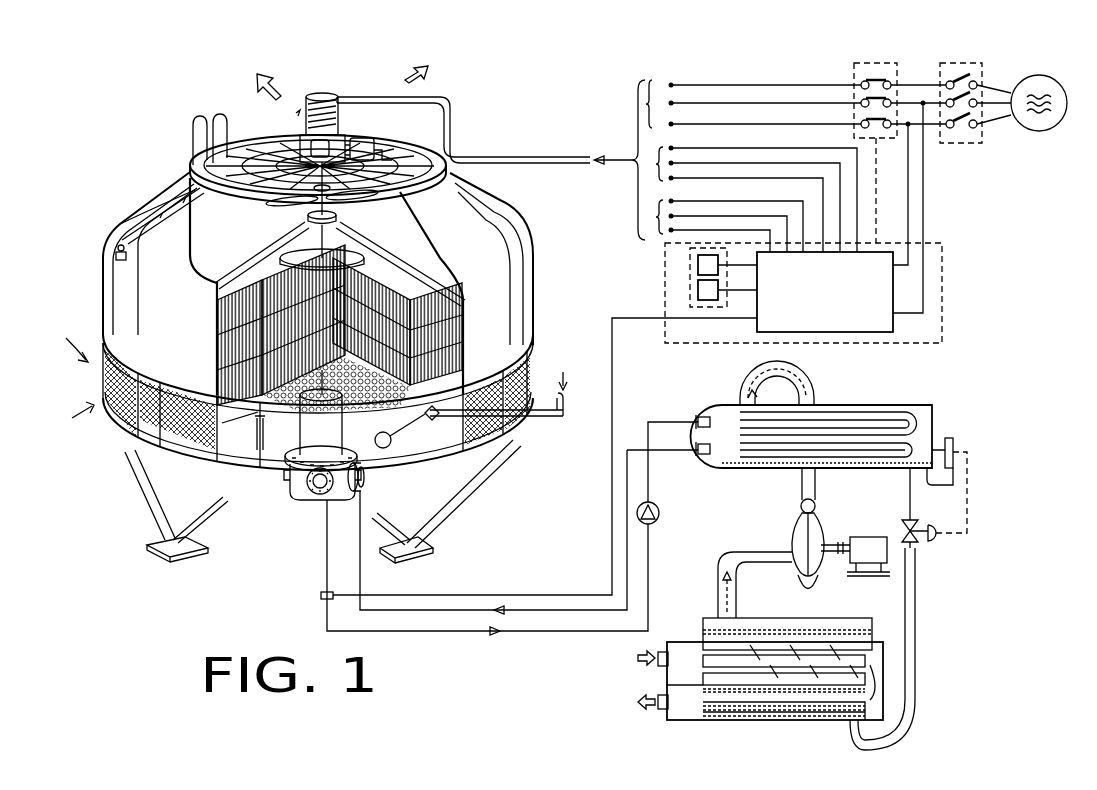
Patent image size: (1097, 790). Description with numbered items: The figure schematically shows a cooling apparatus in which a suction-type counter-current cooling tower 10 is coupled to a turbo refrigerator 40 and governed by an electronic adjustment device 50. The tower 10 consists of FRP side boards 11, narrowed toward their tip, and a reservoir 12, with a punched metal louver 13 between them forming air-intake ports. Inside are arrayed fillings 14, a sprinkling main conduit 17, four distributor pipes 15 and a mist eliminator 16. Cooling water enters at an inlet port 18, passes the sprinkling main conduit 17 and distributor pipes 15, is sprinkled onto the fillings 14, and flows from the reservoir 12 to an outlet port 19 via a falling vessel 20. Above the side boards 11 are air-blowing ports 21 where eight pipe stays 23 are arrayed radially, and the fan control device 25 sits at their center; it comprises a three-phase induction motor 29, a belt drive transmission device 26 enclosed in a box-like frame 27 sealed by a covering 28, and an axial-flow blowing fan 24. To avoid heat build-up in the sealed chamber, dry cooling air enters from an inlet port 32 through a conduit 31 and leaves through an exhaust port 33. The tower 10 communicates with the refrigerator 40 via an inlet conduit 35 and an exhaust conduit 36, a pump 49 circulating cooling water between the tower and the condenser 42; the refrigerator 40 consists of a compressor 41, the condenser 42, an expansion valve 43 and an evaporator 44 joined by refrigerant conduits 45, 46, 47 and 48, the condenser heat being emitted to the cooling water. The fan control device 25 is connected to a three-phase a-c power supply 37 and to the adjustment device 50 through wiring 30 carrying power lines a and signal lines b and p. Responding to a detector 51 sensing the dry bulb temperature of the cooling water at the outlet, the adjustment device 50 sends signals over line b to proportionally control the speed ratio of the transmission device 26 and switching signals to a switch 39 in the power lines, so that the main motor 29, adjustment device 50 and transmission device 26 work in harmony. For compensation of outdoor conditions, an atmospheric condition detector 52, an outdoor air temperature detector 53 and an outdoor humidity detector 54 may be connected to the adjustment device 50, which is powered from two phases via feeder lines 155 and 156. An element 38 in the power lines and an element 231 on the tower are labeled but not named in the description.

The counter-current cooling tower 10 is at (137, 165).
The side boards 11 is at (498, 230).
The reservoir 12 is at (265, 478).
The punched metal louver 13 is at (120, 447).
The fillings 14 is at (270, 304).
The distributor pipes 15 is at (240, 272).
The mist eliminator 16 is at (332, 250).
The sprinkling main conduit 17 is at (325, 400).
The inlet port 18 is at (352, 482).
The outlet port 19 is at (322, 494).
The falling vessel 20 is at (300, 492).
The air-blowing ports 21 is at (243, 150).
The pipe stays 23 is at (192, 172).
The pipe on casing 231 is at (150, 216).
The axial-flow-type blowing fan 24 is at (313, 211).
The fan control device 25 is at (300, 112).
The belt drive transmission device 26 is at (360, 148).
The box-like frame 27 is at (288, 148).
The covering 28 is at (382, 153).
The three-phase induction motor 29 is at (336, 110).
The wiring 30 is at (380, 98).
The conduit 31 is at (469, 420).
The inlet port 32 is at (120, 258).
The exhaust port 33 is at (340, 144).
The inlet conduit 35 is at (450, 617).
The exhaust conduit 36 is at (520, 632).
The three-phase a-c power supply 37 is at (1046, 132).
The main switch 38 is at (981, 65).
The switch 39 is at (897, 66).
The turbo refrigerator 40 is at (738, 516).
The compressor 41 is at (823, 539).
The condenser 42 is at (883, 407).
The expansion valve 43 is at (925, 545).
The evaporator 44 is at (770, 723).
The refrigerant conduit 45 is at (818, 393).
The refrigerant conduit 46 is at (908, 498).
The refrigerant conduit 47 is at (920, 672).
The refrigerant conduit 48 is at (738, 595).
The pump 49 is at (654, 524).
The electronic adjustment device 50 is at (893, 296).
The detector 51 is at (318, 598).
The atmospheric condition detector 52 is at (698, 263).
The outdoor air temperature detector 53 is at (698, 284).
The humidity detector 54 is at (698, 300).
The feeder line 155 is at (907, 198).
The feeder line 156 is at (922, 232).